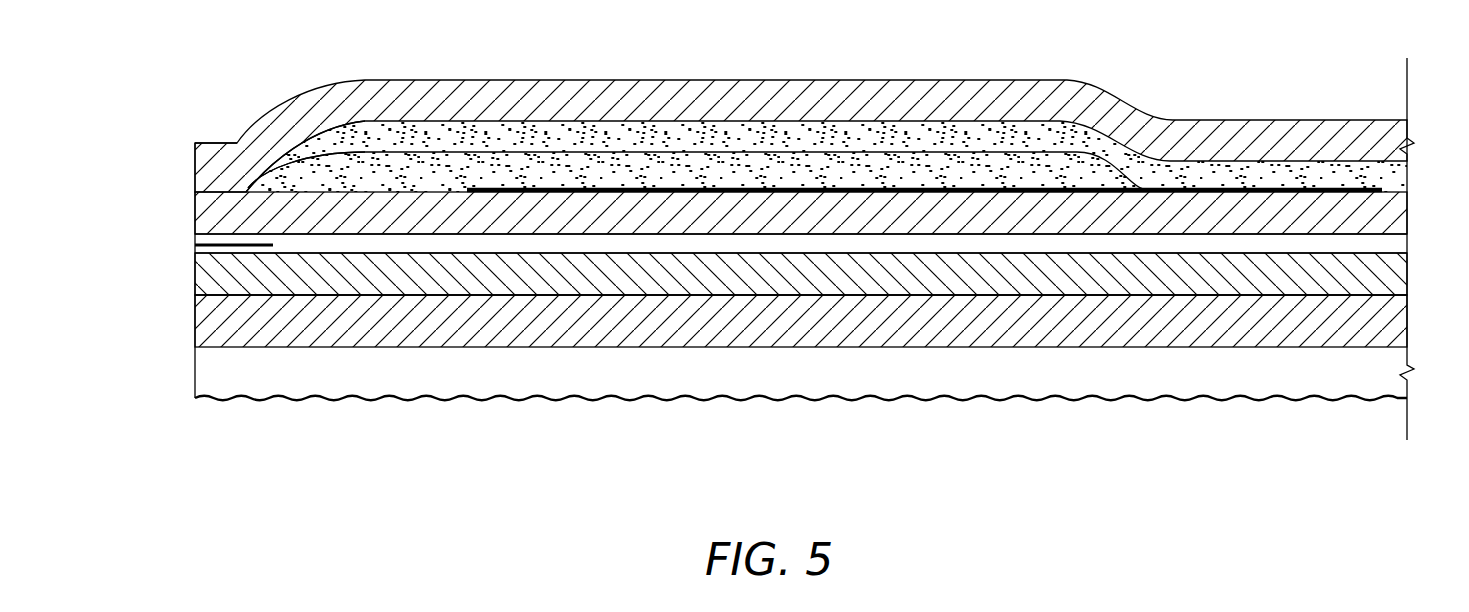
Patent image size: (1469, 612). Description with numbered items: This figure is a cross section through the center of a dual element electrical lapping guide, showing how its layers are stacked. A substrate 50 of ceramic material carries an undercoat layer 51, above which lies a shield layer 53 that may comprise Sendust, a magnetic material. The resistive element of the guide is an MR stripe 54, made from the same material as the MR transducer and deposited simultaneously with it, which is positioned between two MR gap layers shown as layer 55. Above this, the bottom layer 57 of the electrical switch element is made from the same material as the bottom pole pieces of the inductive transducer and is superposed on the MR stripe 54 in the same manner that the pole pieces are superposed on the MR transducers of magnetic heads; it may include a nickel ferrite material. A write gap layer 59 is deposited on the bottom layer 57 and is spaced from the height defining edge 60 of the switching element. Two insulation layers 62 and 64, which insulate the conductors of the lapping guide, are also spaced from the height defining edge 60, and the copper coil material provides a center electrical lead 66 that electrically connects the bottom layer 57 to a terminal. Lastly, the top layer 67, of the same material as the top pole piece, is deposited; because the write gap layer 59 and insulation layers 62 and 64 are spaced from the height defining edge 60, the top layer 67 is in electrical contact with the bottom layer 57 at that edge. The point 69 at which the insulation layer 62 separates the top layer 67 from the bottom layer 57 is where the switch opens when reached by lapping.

The substrate 50 is at (810, 390).
The undercoat layer 51 is at (1248, 333).
The shield layer 53 is at (1167, 287).
The MR gap layers 55 is at (1098, 242).
The bottom layer of the electrical switch element 57 is at (978, 223).
The write gap layer 59 is at (887, 192).
The MR stripe 54 is at (250, 247).
The height defining edge 60 is at (195, 212).
The insulation layer 62 is at (660, 167).
The insulation layer 64 is at (750, 135).
The center electrical lead 66 is at (1393, 188).
The top layer of the electrical switching element 67 is at (935, 88).
The point at which the insulation layer separates the top layer from the bottom laye 69 is at (248, 186).